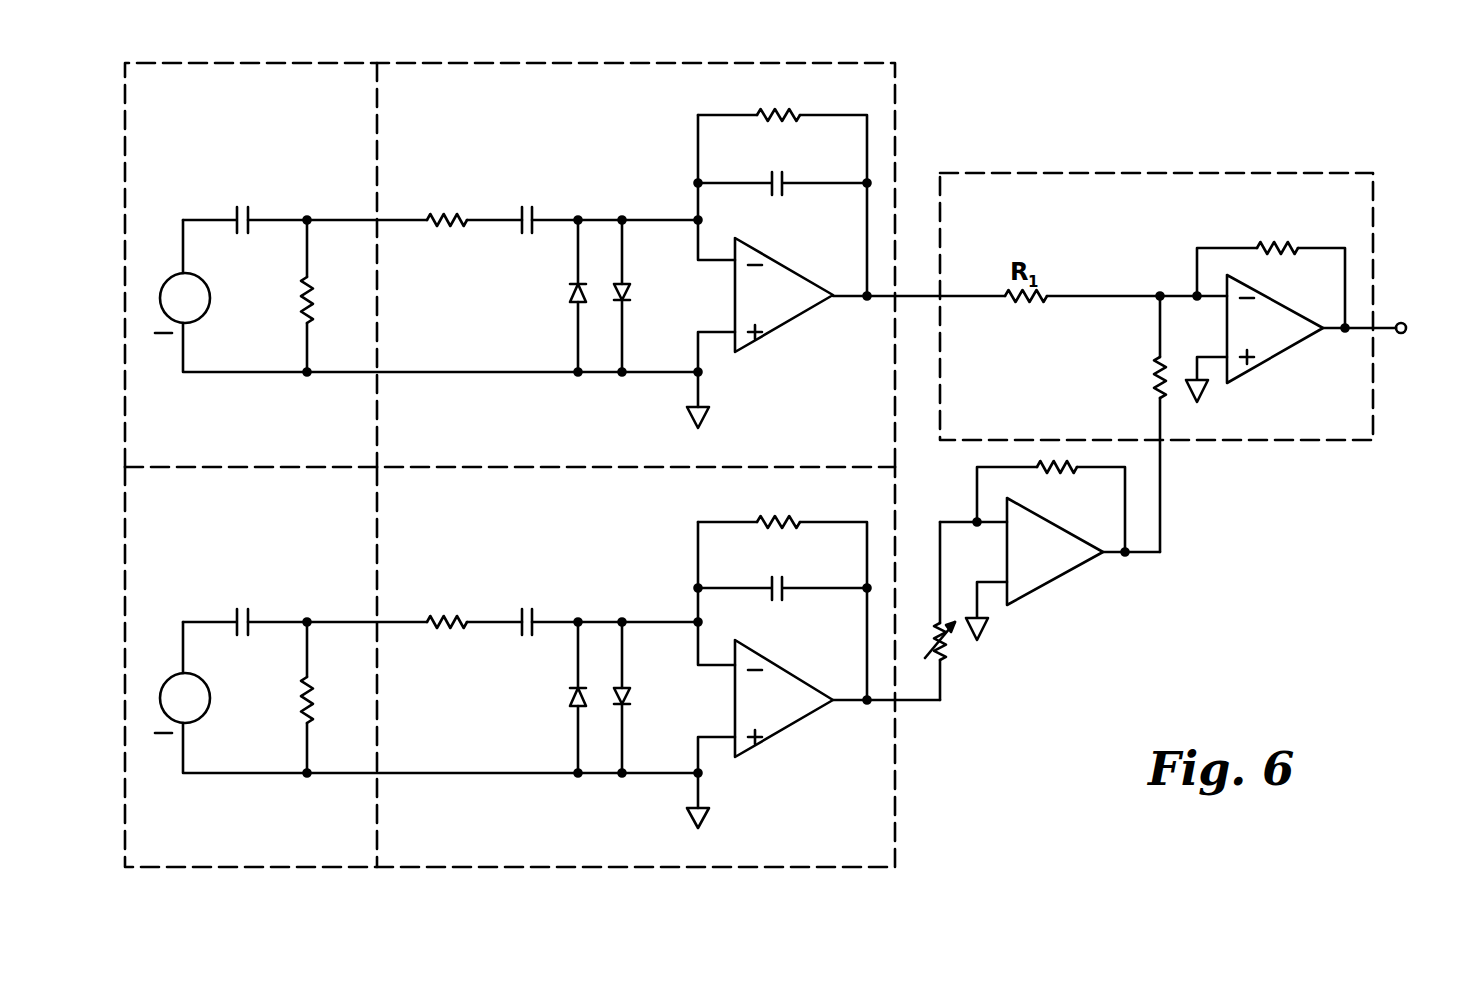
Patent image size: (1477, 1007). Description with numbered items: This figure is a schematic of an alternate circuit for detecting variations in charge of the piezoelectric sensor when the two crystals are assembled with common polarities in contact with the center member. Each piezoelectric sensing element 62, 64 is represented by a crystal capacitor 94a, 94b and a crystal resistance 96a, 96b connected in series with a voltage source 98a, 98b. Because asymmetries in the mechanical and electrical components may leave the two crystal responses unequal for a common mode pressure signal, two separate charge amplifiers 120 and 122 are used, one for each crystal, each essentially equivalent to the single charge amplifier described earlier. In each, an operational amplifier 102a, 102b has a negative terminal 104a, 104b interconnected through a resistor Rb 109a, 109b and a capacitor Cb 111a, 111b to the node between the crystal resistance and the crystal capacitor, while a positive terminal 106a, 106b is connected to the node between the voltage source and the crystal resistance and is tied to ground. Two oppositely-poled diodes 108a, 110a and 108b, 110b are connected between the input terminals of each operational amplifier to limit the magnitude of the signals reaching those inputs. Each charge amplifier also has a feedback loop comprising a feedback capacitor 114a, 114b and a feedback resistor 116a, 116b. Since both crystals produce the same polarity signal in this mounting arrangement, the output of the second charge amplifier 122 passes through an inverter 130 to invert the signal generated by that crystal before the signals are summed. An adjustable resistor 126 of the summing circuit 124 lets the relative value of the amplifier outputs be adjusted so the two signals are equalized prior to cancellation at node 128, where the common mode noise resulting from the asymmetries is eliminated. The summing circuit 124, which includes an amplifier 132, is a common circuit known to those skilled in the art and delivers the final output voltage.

The piezoelectric sensing element 62 is at (123, 117).
The piezoelectric sensing element 64 is at (123, 831).
The charge amplifier 120 is at (440, 104).
The charge amplifier 122 is at (470, 851).
The summing circuit 124 is at (1345, 428).
The crystal capacitor 94a is at (233, 212).
The crystal capacitor 94b is at (233, 614).
The crystal resistance 96a is at (298, 300).
The crystal resistance 96b is at (298, 700).
The voltage source 98a is at (206, 283).
The voltage source 98b is at (206, 683).
The resistor Rb 109a is at (430, 210).
The resistor Rb 109b is at (430, 612).
The capacitor Cb 111a is at (515, 228).
The capacitor Cb 111b is at (515, 630).
The diode 108a is at (572, 293).
The diode 108b is at (572, 697).
The diode 110a is at (627, 287).
The diode 110b is at (627, 691).
The operational amplifier 102a is at (800, 306).
The operational amplifier 102b is at (800, 711).
The negative terminal 104a is at (718, 265).
The negative terminal 104b is at (718, 670).
The positive terminal 106a is at (697, 357).
The positive terminal 106b is at (697, 761).
The feedback capacitor 114a is at (770, 180).
The feedback capacitor 114b is at (770, 585).
The feedback resistor 116a is at (762, 110).
The feedback resistor 116b is at (762, 517).
The adjustable resistor 126 is at (950, 650).
The node 128 is at (1155, 300).
The inverter 130 is at (1071, 564).
The amplifier 132 is at (1288, 341).